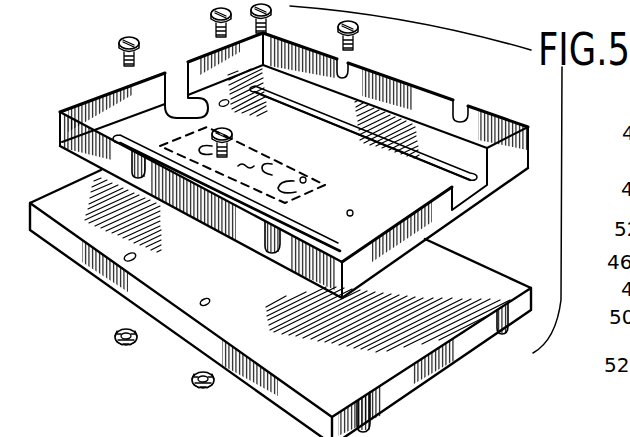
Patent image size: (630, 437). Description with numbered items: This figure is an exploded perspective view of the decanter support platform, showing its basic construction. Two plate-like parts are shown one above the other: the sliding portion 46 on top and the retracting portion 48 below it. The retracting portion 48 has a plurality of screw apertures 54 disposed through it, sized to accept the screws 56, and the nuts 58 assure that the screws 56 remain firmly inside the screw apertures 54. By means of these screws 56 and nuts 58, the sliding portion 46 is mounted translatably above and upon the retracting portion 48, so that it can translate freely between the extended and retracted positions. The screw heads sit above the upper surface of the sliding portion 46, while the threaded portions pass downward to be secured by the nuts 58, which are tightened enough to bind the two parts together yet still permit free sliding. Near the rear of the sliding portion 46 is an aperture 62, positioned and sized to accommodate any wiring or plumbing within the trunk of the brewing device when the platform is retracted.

The sliding portion 46 is at (511, 181).
The retracting portion 48 is at (462, 358).
The screw apertures 54 is at (124, 262).
The screws 56 is at (120, 38).
The nuts 58 is at (125, 346).
The aperture 62 is at (182, 110).